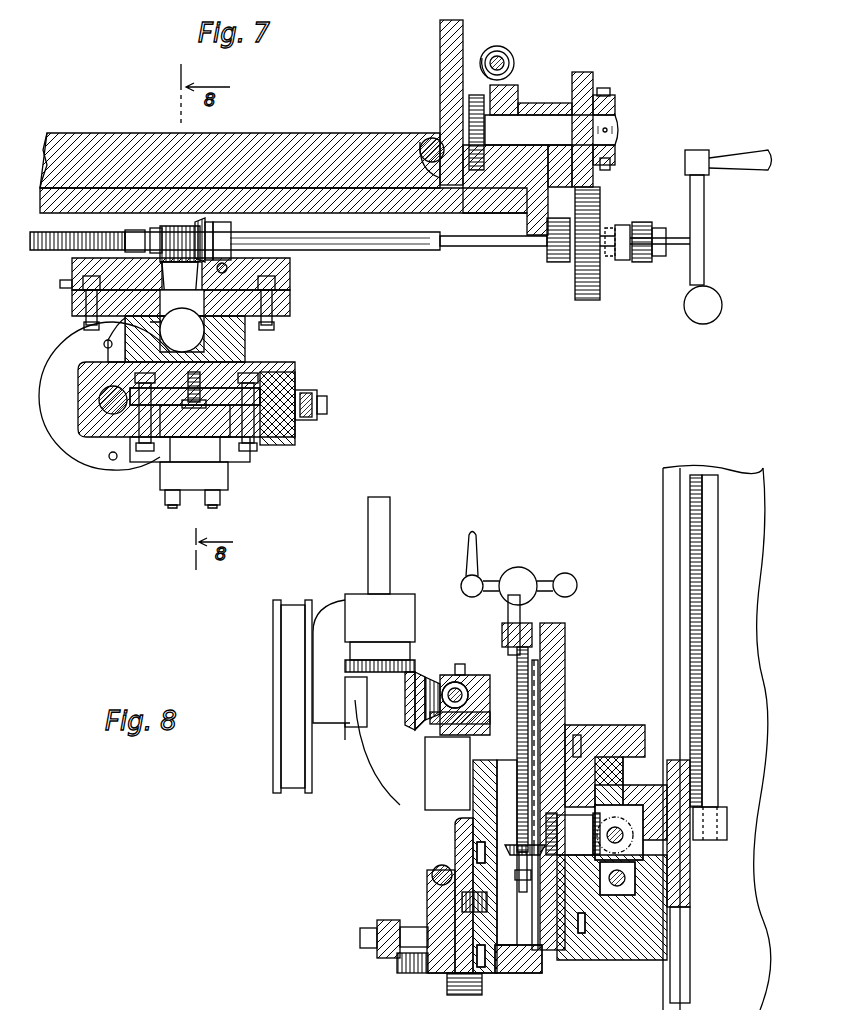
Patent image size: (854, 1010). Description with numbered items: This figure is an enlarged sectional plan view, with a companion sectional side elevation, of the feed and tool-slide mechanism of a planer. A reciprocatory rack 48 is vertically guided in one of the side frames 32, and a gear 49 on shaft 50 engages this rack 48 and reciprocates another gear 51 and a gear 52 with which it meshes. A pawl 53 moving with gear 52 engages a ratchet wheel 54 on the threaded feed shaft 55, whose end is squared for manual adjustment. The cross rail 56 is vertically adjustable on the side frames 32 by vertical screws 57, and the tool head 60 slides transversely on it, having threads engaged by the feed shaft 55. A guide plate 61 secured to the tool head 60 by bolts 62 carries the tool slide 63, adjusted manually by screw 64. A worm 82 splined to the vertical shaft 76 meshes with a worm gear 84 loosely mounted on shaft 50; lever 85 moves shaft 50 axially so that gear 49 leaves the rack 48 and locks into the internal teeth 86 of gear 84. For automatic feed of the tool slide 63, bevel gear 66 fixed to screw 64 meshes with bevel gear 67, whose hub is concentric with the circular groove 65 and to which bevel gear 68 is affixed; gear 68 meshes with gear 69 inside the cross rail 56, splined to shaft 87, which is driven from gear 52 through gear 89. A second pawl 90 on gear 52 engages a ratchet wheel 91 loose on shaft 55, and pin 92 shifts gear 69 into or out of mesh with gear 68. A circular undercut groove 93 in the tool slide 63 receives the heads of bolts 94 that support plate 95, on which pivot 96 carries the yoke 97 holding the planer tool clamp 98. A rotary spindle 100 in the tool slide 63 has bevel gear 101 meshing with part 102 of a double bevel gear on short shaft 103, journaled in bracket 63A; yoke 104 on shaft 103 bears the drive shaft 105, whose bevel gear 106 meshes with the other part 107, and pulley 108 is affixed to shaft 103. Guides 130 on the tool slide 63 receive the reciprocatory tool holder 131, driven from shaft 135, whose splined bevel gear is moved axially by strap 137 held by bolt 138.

In FIG. 7, the side frame 32 is at (440, 70).
In FIG. 7, the reciprocatory rack 48 is at (513, 190).
In FIG. 7, the gear 49 is at (474, 123).
In FIG. 7, the shaft 50 is at (612, 124).
In FIG. 7, the gear 51 is at (585, 78).
In FIG. 7, the gear 52 is at (590, 298).
In FIG. 7, the pawl 53 is at (655, 262).
In FIG. 7, the ratchet wheel 54 is at (657, 228).
In FIG. 7, the threaded feed shaft 55 is at (62, 252).
In FIG. 8, the threaded feed shaft 55 is at (616, 895).
In FIG. 7, the cross rail 56 is at (85, 140).
In FIG. 8, the cross rail 56 is at (656, 785).
In FIG. 7, the vertical screw 57 is at (430, 140).
In FIG. 8, the vertical screw 57 is at (718, 712).
In FIG. 7, the tool head 60 is at (290, 272).
In FIG. 8, the tool head 60 is at (614, 726).
In FIG. 7, the guide plate 61 is at (290, 302).
In FIG. 8, the guide plate 61 is at (565, 667).
In FIG. 7, the bolt 62 is at (82, 326).
In FIG. 7, the tool slide 63 is at (245, 355).
In FIG. 8, the tool slide 63 is at (470, 750).
In FIG. 8, the bracket 63A is at (412, 742).
In FIG. 7, the screw 64 is at (160, 326).
In FIG. 8, the screw 64 is at (518, 672).
In FIG. 7, the circular groove 65 is at (68, 284).
In FIG. 8, the circular groove 65 is at (582, 738).
In FIG. 7, the bevel gear 66 is at (210, 333).
In FIG. 8, the bevel gear 66 is at (508, 842).
In FIG. 7, the bevel gear 67 is at (150, 327).
In FIG. 8, the bevel gear 67 is at (546, 838).
In FIG. 7, the bevel gear 68 is at (172, 262).
In FIG. 8, the bevel gear 68 is at (597, 825).
In FIG. 7, the bevel gear 69 is at (208, 225).
In FIG. 8, the bevel gear 69 is at (656, 960).
In FIG. 7, the vertical shaft 76 is at (508, 62).
In FIG. 7, the worm 82 is at (490, 46).
In FIG. 7, the worm gear 84 is at (528, 100).
In FIG. 7, the lever 85 is at (608, 168).
In FIG. 7, the internal teeth 86 is at (518, 88).
In FIG. 7, the shaft 87 is at (405, 255).
In FIG. 8, the shaft 87 is at (626, 828).
In FIG. 7, the gear 89 is at (555, 262).
In FIG. 7, the pawl 90 is at (623, 250).
In FIG. 7, the ratchet wheel 91 is at (638, 258).
In FIG. 7, the pin 92 is at (232, 252).
In FIG. 7, the circular undercut groove 93 is at (285, 376).
In FIG. 8, the circular undercut groove 93 is at (487, 958).
In FIG. 7, the bolt 94 is at (150, 445).
In FIG. 7, the plate 95 is at (140, 437).
In FIG. 8, the plate 95 is at (460, 844).
In FIG. 8, the pivot 96 is at (432, 872).
In FIG. 7, the yoke 97 is at (222, 440).
In FIG. 8, the yoke 97 is at (430, 903).
In FIG. 7, the planer tool clamp 98 is at (225, 480).
In FIG. 8, the planer tool clamp 98 is at (385, 918).
In FIG. 7, the rotary spindle 100 is at (140, 422).
In FIG. 8, the rotary spindle 100 is at (447, 985).
In FIG. 8, the bevel gear 101 is at (402, 740).
In FIG. 8, the part of double bevel gear 102 is at (432, 676).
In FIG. 8, the short shaft 103 is at (272, 686).
In FIG. 8, the yoke 104 is at (336, 614).
In FIG. 8, the drive shaft 105 is at (387, 512).
In FIG. 8, the bevel gear 106 is at (397, 658).
In FIG. 8, the part of double bevel gear 107 is at (400, 732).
In FIG. 8, the pulley 108 is at (280, 764).
In FIG. 7, the guide 130 is at (295, 440).
In FIG. 7, the reciprocatory tool holder 131 is at (290, 384).
In FIG. 8, the shaft 135 is at (466, 682).
In FIG. 8, the strap 137 is at (452, 682).
In FIG. 8, the bolt 138 is at (438, 675).